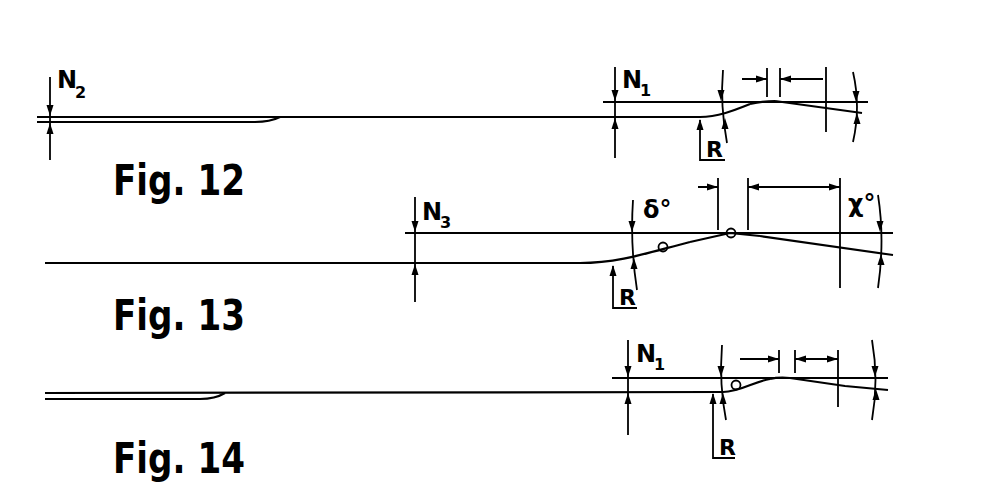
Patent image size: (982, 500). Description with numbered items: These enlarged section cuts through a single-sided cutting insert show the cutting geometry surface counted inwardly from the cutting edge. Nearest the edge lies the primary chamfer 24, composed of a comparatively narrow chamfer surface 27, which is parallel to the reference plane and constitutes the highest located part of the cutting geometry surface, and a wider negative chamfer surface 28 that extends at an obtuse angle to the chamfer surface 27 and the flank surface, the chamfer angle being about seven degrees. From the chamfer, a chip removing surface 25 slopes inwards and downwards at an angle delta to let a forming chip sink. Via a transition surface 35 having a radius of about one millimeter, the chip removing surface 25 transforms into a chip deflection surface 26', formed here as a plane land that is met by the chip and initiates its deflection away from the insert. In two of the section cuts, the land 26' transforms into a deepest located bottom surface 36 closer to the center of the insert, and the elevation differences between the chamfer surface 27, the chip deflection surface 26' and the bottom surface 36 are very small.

In FIG. 12, the primary chamfer 24 is at (793, 95).
In FIG. 13, the chip removing surface 25 is at (668, 251).
In FIG. 14, the chip removing surface 25 is at (741, 388).
In FIG. 12, the chip deflection surface 26' is at (393, 86).
In FIG. 14, the chip deflection surface 26' is at (407, 372).
In FIG. 12, the chamfer surface 27 is at (773, 100).
In FIG. 13, the chamfer surface 27 is at (736, 238).
In FIG. 14, the chamfer surface 27 is at (786, 372).
In FIG. 13, the negative chamfer surface 28 is at (793, 238).
In FIG. 13, the transition surface 35 is at (613, 260).
In FIG. 12, the bottom surface 36 is at (178, 116).
In FIG. 13, the bottom surface 36 is at (483, 263).
In FIG. 14, the bottom surface 36 is at (67, 392).